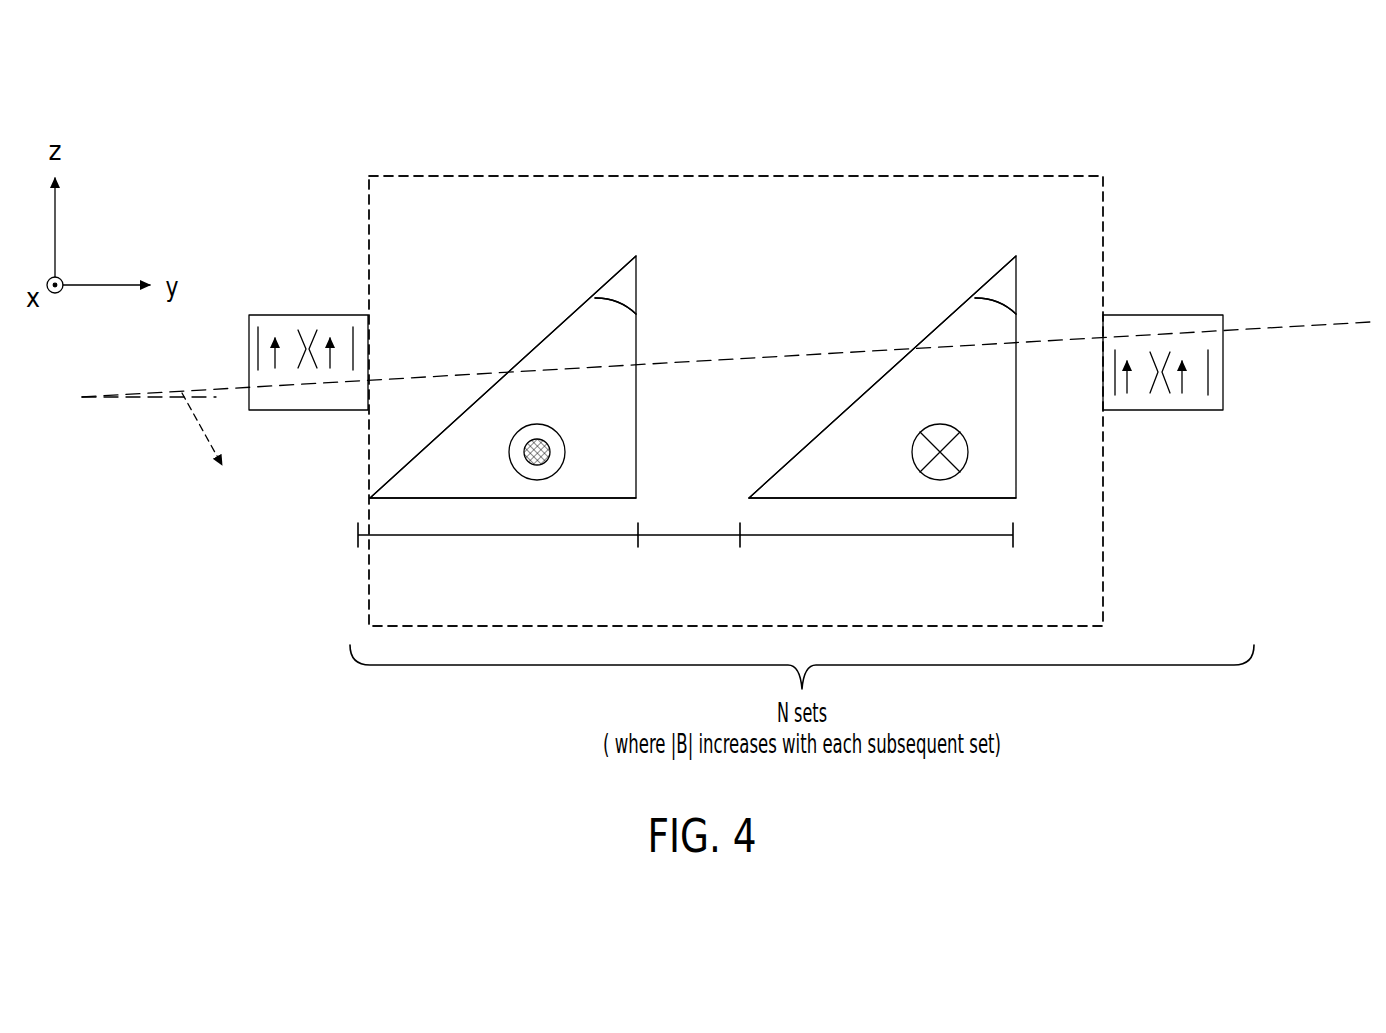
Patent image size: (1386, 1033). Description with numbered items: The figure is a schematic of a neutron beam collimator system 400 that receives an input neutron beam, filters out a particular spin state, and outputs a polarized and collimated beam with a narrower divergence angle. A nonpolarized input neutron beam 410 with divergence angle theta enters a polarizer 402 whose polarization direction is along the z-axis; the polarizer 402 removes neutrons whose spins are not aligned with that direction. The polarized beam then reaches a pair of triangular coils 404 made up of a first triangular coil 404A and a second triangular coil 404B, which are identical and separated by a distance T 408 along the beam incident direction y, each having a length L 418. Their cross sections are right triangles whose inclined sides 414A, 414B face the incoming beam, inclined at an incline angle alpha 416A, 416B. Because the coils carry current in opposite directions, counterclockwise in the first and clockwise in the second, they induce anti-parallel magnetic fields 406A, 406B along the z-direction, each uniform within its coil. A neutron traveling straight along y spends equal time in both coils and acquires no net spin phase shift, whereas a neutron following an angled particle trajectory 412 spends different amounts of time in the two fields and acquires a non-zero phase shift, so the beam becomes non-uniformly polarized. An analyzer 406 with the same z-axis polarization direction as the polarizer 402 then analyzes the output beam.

The neutron beam collimator system 400 is at (318, 98).
The polarizer 402 is at (316, 315).
The pair of triangular coils 404 is at (693, 176).
The first triangular coil 404A is at (499, 258).
The second triangular coil 404B is at (919, 258).
The analyzer 406 is at (1175, 315).
The first magnetic field 406A is at (442, 488).
The second magnetic field 406B is at (822, 488).
The distance T 408 is at (684, 570).
The input neutron beam 410 is at (148, 399).
The particle trajectory 412 is at (1318, 327).
The inclined side of first triangular coil 414A is at (563, 320).
The inclined side of second triangular coil 414B is at (946, 320).
The incline angle of first triangular coil 416A is at (620, 292).
The incline angle of second triangular coil 416B is at (1002, 292).
The coil length L 418 is at (478, 570).